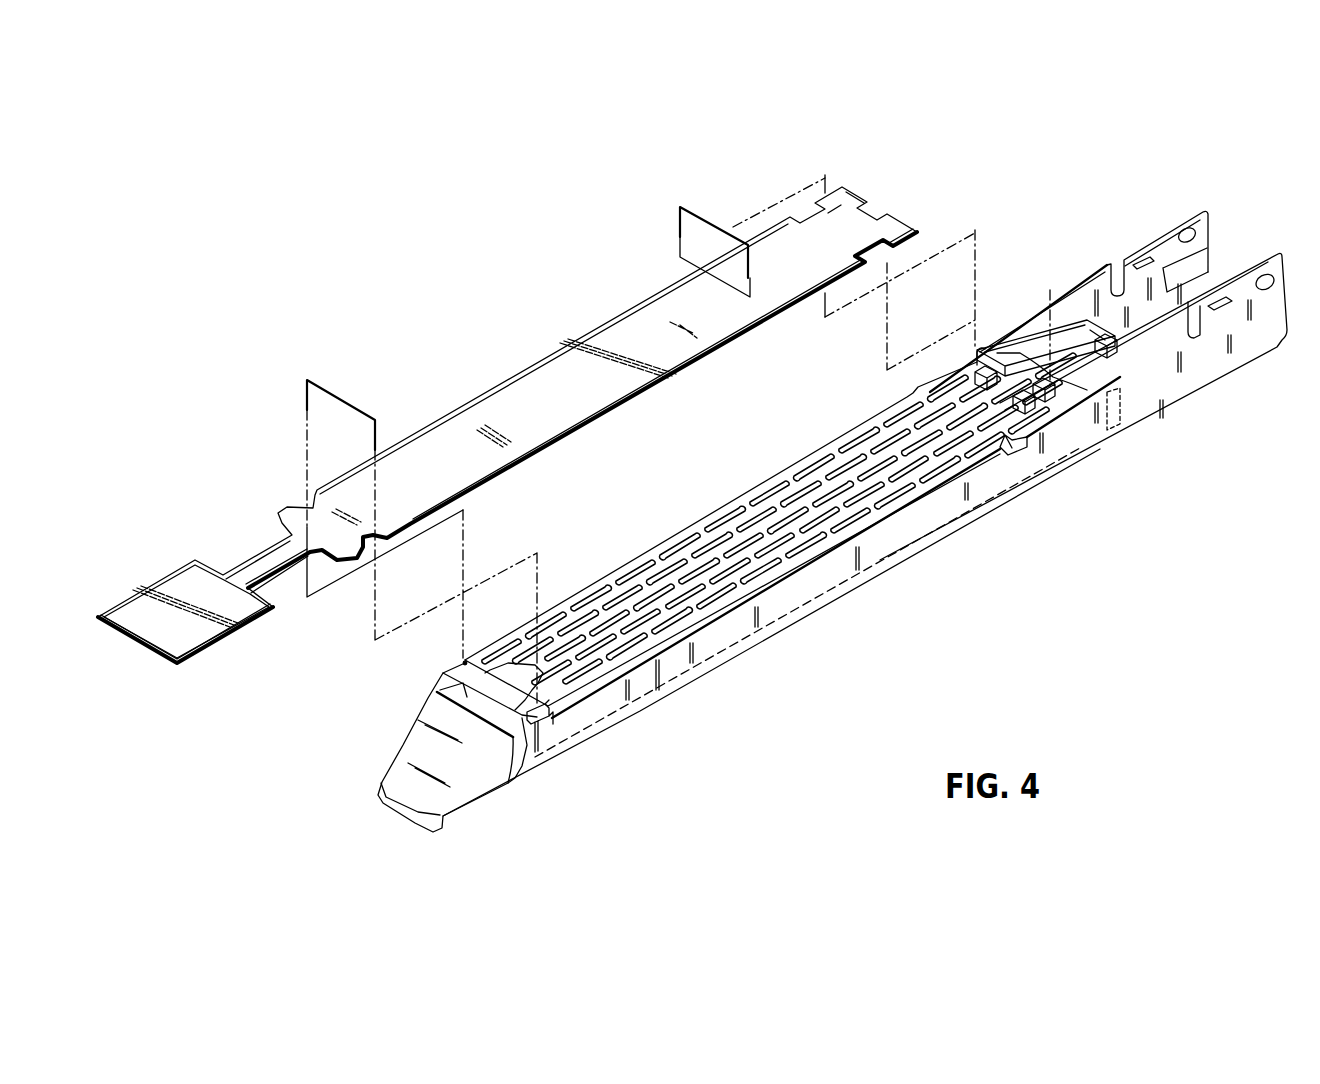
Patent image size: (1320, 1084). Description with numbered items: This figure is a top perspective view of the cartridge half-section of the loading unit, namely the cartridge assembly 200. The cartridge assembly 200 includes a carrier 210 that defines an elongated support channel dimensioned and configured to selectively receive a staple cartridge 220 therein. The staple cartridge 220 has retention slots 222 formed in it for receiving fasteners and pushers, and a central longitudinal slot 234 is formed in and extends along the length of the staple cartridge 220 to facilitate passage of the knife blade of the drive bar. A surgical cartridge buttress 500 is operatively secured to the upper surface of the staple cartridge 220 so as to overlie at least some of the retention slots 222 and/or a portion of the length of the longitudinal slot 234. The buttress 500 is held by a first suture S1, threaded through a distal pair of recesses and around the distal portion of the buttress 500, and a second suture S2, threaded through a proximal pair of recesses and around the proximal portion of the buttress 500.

The cartridge assembly 200 is at (909, 171).
The carrier 210 is at (1172, 414).
The staple cartridge 220 is at (586, 576).
The retention slots 222 is at (532, 633).
The central longitudinal slot 234 is at (833, 490).
The surgical cartridge buttress 500 is at (534, 350).
The first suture S1 is at (330, 390).
The second suture S2 is at (705, 216).